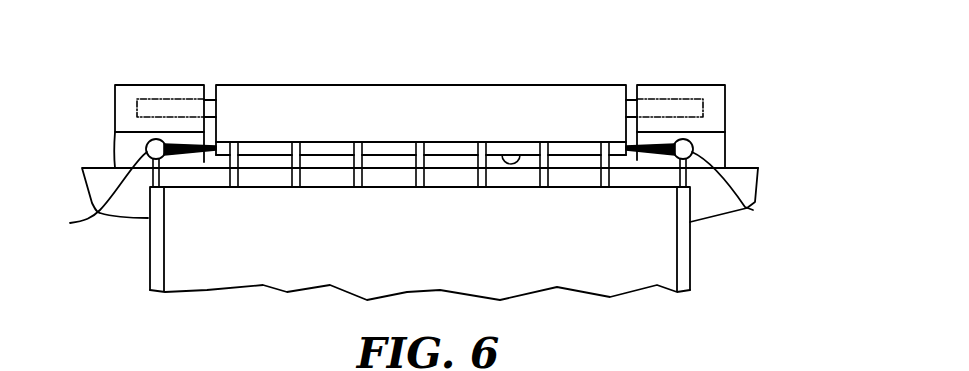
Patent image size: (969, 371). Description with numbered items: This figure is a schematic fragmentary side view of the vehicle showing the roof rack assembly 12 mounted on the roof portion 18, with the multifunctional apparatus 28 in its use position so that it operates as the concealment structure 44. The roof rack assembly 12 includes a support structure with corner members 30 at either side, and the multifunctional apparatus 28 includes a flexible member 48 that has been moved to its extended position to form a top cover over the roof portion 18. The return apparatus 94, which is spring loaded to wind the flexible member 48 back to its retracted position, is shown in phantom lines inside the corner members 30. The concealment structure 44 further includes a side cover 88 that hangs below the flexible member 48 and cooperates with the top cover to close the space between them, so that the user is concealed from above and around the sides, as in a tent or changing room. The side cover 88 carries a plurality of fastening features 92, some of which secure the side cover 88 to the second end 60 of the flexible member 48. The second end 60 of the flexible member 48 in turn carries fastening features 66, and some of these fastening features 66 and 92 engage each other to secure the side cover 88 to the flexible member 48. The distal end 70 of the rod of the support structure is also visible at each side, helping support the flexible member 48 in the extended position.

The roof rack assembly 12 is at (710, 50).
The roof portion 18 is at (100, 168).
The multifunctional apparatus 28 is at (449, 80).
The corner members 30 is at (115, 95).
The concealment structure 44 is at (750, 268).
The flexible member 48 is at (367, 97).
The second end 60 is at (520, 156).
The fastening features 66 is at (347, 143).
The distal end 70 is at (762, 217).
The side cover 88 is at (157, 252).
The fastening features 92 is at (151, 178).
The return apparatus 94 is at (168, 99).